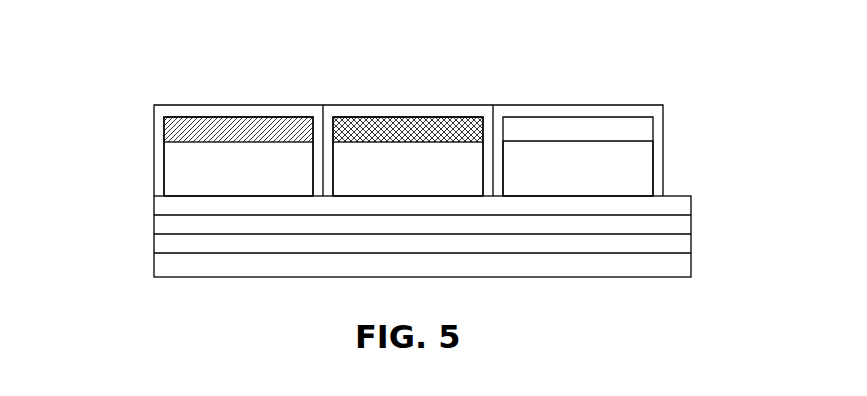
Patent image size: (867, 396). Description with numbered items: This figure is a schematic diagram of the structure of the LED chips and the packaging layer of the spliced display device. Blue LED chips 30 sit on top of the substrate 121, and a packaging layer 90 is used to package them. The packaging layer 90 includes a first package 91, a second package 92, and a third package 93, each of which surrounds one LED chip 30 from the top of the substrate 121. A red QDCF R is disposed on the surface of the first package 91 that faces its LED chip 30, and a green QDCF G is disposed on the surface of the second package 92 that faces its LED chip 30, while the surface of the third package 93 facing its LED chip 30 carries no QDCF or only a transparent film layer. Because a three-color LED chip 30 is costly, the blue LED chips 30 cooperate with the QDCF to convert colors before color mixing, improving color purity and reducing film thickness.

The LED chips 30 is at (592, 163).
The packaging layer 90 is at (655, 156).
The first package 91 is at (253, 110).
The second package 92 is at (408, 111).
The third package 93 is at (553, 113).
The substrate 121 is at (205, 203).
The red QDCF R is at (193, 123).
The green QDCF G is at (355, 133).